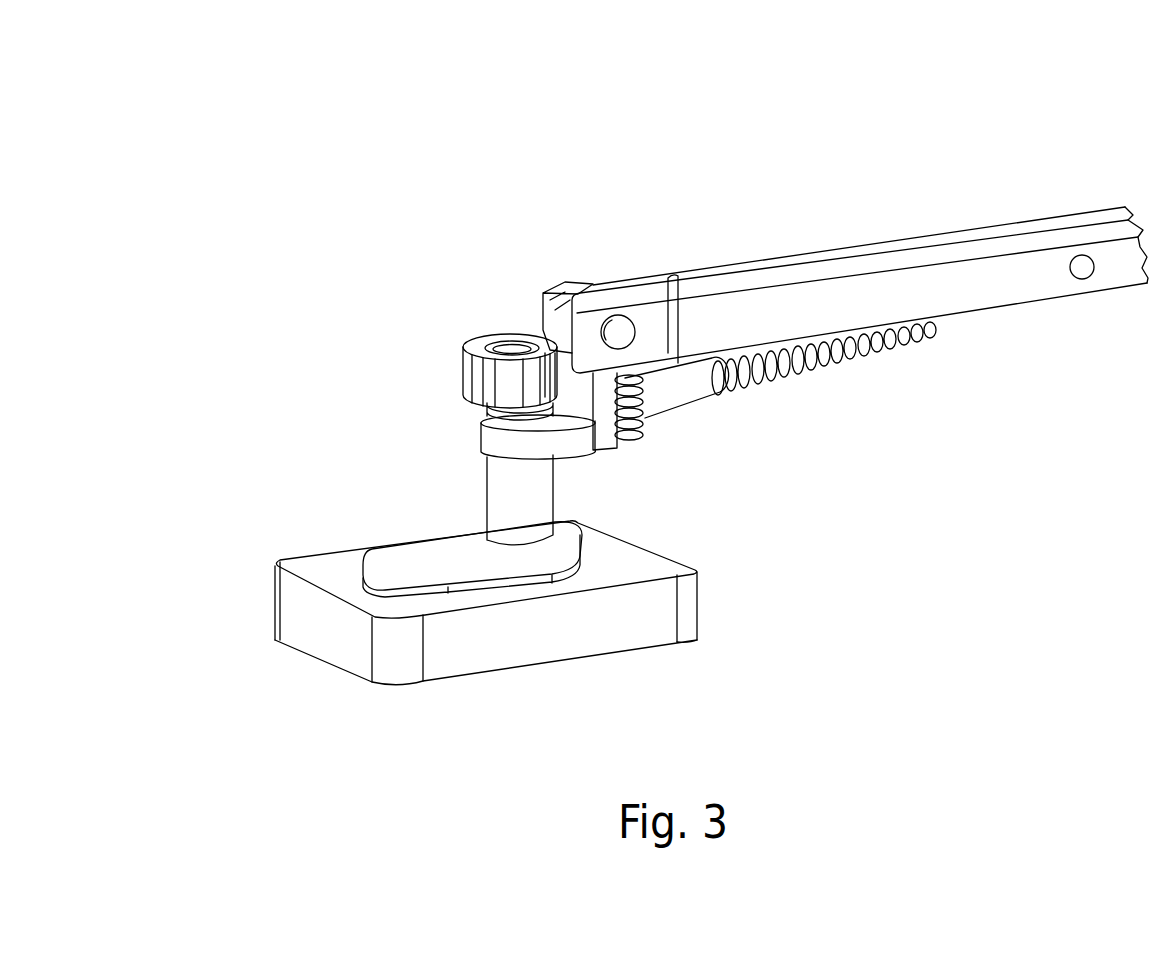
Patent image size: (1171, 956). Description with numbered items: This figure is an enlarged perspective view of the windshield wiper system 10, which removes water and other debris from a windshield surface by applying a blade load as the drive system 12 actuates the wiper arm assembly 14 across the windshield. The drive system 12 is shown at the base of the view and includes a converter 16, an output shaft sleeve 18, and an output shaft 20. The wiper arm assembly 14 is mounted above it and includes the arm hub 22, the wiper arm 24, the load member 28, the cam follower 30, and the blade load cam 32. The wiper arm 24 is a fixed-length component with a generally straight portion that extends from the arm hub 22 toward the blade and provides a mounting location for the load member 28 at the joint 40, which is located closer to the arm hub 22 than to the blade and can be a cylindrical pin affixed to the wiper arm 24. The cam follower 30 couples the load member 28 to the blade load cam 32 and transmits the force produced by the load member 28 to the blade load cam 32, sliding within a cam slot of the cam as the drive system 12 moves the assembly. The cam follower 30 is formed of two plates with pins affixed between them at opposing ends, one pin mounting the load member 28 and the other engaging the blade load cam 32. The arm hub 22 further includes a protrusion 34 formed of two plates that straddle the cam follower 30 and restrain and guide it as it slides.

The windshield wiper system 10 is at (665, 399).
The drive system 12 is at (440, 578).
The wiper arm assembly 14 is at (773, 281).
The converter 16 is at (270, 596).
The output shaft sleeve 18 is at (485, 492).
The output shaft 20 is at (526, 345).
The arm hub 22 is at (470, 347).
The wiper arm 24 is at (741, 257).
The load member 28 is at (768, 392).
The cam follower 30 is at (630, 437).
The blade load cam 32 is at (480, 433).
The protrusion 34 is at (604, 440).
The joint 40 is at (1084, 254).